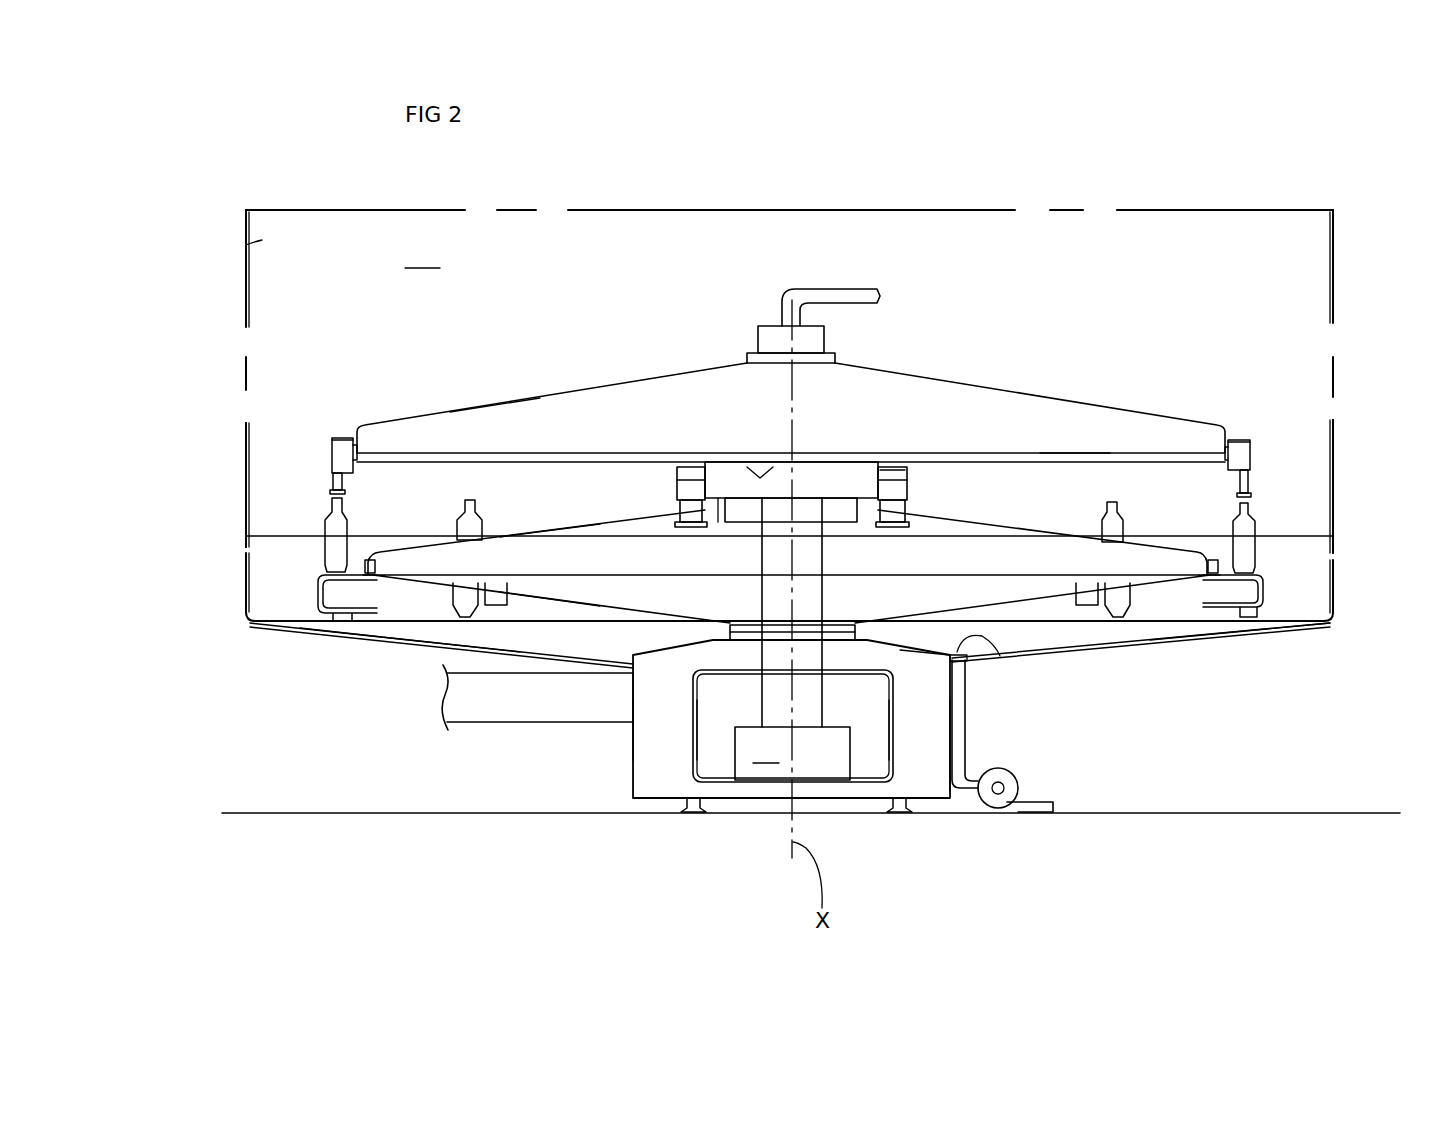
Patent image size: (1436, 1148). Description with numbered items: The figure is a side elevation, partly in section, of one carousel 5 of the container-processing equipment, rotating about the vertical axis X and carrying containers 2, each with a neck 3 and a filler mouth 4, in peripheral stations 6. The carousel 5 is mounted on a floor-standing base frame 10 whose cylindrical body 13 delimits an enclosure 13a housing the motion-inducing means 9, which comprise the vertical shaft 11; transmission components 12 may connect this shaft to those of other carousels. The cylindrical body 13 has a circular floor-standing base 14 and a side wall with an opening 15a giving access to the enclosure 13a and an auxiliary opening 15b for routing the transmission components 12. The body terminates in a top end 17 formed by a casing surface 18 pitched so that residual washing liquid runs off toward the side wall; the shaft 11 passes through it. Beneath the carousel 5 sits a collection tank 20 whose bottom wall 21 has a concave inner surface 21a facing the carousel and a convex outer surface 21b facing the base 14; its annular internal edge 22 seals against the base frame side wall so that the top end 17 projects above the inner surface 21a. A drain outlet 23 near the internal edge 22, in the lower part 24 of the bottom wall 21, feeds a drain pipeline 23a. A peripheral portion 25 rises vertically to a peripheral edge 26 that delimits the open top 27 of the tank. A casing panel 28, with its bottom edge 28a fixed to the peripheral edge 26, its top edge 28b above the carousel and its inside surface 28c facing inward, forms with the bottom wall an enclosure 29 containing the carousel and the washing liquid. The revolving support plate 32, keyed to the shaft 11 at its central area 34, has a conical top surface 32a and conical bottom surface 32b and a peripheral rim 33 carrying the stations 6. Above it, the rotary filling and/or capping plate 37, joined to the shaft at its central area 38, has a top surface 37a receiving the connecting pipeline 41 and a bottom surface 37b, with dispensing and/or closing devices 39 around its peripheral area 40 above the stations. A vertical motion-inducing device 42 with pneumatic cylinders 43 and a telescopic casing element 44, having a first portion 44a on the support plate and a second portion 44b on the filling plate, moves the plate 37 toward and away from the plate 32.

The container 2 is at (333, 524).
The neck 3 is at (330, 500).
The filler mouth 4 is at (326, 456).
The carousel 5 is at (1188, 262).
The peripheral station 6 is at (372, 546).
The motion-inducing means 9 is at (792, 753).
The base frame 10 is at (641, 800).
The vertical shaft 11 is at (826, 557).
The transmission components 12 is at (482, 710).
The cylindrical body 13 is at (632, 776).
The enclosure 13a is at (868, 762).
The floor-standing base 14 is at (753, 800).
The opening 15a is at (712, 754).
The auxiliary opening 15b is at (633, 684).
The top end 17 is at (968, 650).
The casing surface 18 is at (910, 652).
The collection tank 20 is at (1233, 650).
The bottom wall 21 is at (1303, 546).
The concave inner surface 21a is at (446, 640).
The convex outer surface 21b is at (362, 642).
The internal edge 22 is at (633, 732).
The drain outlet 23 is at (966, 646).
The drain pipeline 23a is at (966, 754).
The lower part 24 is at (952, 660).
The peripheral portion 25 is at (246, 604).
The peripheral edge 26 is at (246, 537).
The open top 27 is at (1333, 432).
The casing panel 28 is at (246, 378).
The bottom edge 28a is at (246, 522).
The top edge 28b is at (246, 210).
The inside surface 28c is at (248, 246).
The enclosure 29 is at (422, 255).
The revolving support plate 32 is at (1022, 526).
The conical top surface 32a is at (580, 527).
The conical bottom surface 32b is at (566, 600).
The peripheral rim 33 is at (360, 576).
The central area 34 is at (842, 500).
The rotary filling and/or capping plate 37 is at (1040, 392).
The top surface 37a is at (536, 400).
The bottom surface 37b is at (1074, 462).
The central area 38 is at (760, 462).
The dispensing and/or closing device 39 is at (340, 438).
The peripheral area 40 is at (348, 436).
The connecting pipeline 41 is at (812, 289).
The vertical motion-inducing device 42 is at (932, 486).
The pneumatic cylinder 43 is at (668, 480).
The telescopic casing element 44 is at (682, 472).
The first portion 44a is at (720, 506).
The second portion 44b is at (900, 466).